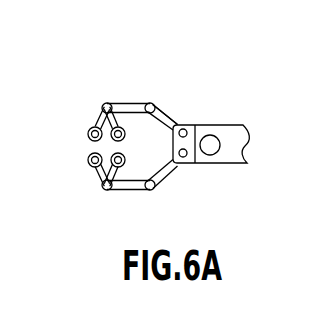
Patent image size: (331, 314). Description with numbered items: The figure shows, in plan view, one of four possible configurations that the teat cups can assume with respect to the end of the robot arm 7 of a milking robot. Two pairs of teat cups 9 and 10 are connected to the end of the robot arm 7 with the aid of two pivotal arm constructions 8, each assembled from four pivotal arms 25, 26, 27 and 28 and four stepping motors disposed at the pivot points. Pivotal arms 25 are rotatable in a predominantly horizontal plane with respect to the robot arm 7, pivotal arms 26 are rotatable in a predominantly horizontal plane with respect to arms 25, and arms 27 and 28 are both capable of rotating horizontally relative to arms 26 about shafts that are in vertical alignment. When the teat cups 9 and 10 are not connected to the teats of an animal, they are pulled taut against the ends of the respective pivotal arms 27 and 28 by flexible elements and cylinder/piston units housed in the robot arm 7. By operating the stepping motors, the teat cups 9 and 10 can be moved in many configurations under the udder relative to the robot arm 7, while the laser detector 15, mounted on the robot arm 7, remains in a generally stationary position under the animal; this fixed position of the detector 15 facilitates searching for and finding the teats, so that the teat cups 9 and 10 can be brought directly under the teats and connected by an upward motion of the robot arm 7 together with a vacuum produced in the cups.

The robot arm 7 is at (249, 147).
The pivotal arm construction 8 is at (127, 193).
The teat cups 9 is at (89, 130).
The teat cups 10 is at (125, 132).
The laser detector 15 is at (211, 135).
The pivotal arm 25 is at (167, 116).
The pivotal arm 26 is at (138, 104).
The pivotal arm 27 is at (100, 118).
The pivotal arm 28 is at (131, 103).